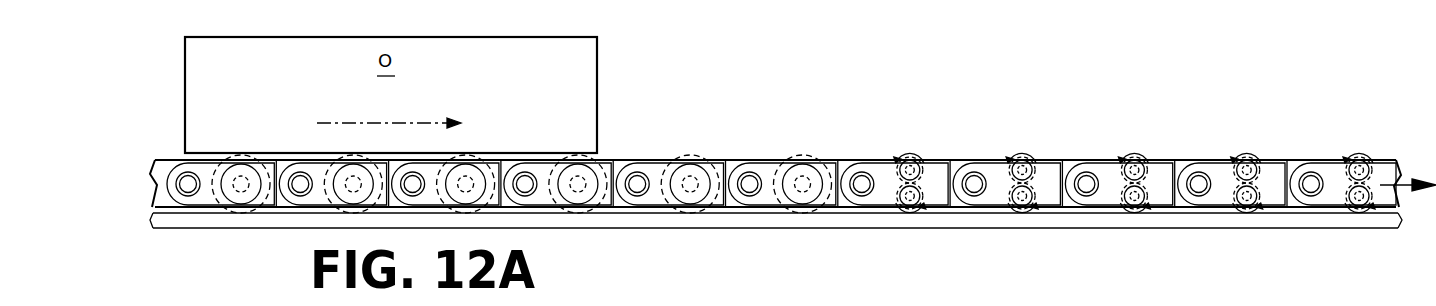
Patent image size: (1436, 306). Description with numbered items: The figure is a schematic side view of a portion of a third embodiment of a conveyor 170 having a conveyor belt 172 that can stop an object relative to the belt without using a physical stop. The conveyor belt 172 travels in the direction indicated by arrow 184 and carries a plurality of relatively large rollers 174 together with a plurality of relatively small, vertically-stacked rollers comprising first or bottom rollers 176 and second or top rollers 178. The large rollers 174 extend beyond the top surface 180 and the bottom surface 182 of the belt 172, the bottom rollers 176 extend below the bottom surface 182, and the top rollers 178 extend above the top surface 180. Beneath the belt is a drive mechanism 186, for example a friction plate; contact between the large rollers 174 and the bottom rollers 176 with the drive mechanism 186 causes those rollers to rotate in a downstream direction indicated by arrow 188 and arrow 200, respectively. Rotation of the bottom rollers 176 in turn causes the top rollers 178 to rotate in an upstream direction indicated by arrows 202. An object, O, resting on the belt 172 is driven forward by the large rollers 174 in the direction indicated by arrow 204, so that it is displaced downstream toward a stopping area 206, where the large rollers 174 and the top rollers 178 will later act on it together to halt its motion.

The conveyor 170 is at (1249, 131).
The conveyor belt 172 is at (1401, 155).
The large rollers 174 is at (574, 210).
The bottom rollers 176 is at (1249, 212).
The top rollers 178 is at (922, 160).
The top surface 180 is at (773, 160).
The bottom surface 182 is at (648, 210).
The arrow 184 is at (1410, 192).
The drive mechanism 186 is at (1180, 222).
The arrow 188 is at (698, 160).
The arrow 200 is at (1140, 214).
The arrows 202 is at (1134, 152).
The arrow 204 is at (358, 123).
The stopping area 206 is at (851, 230).